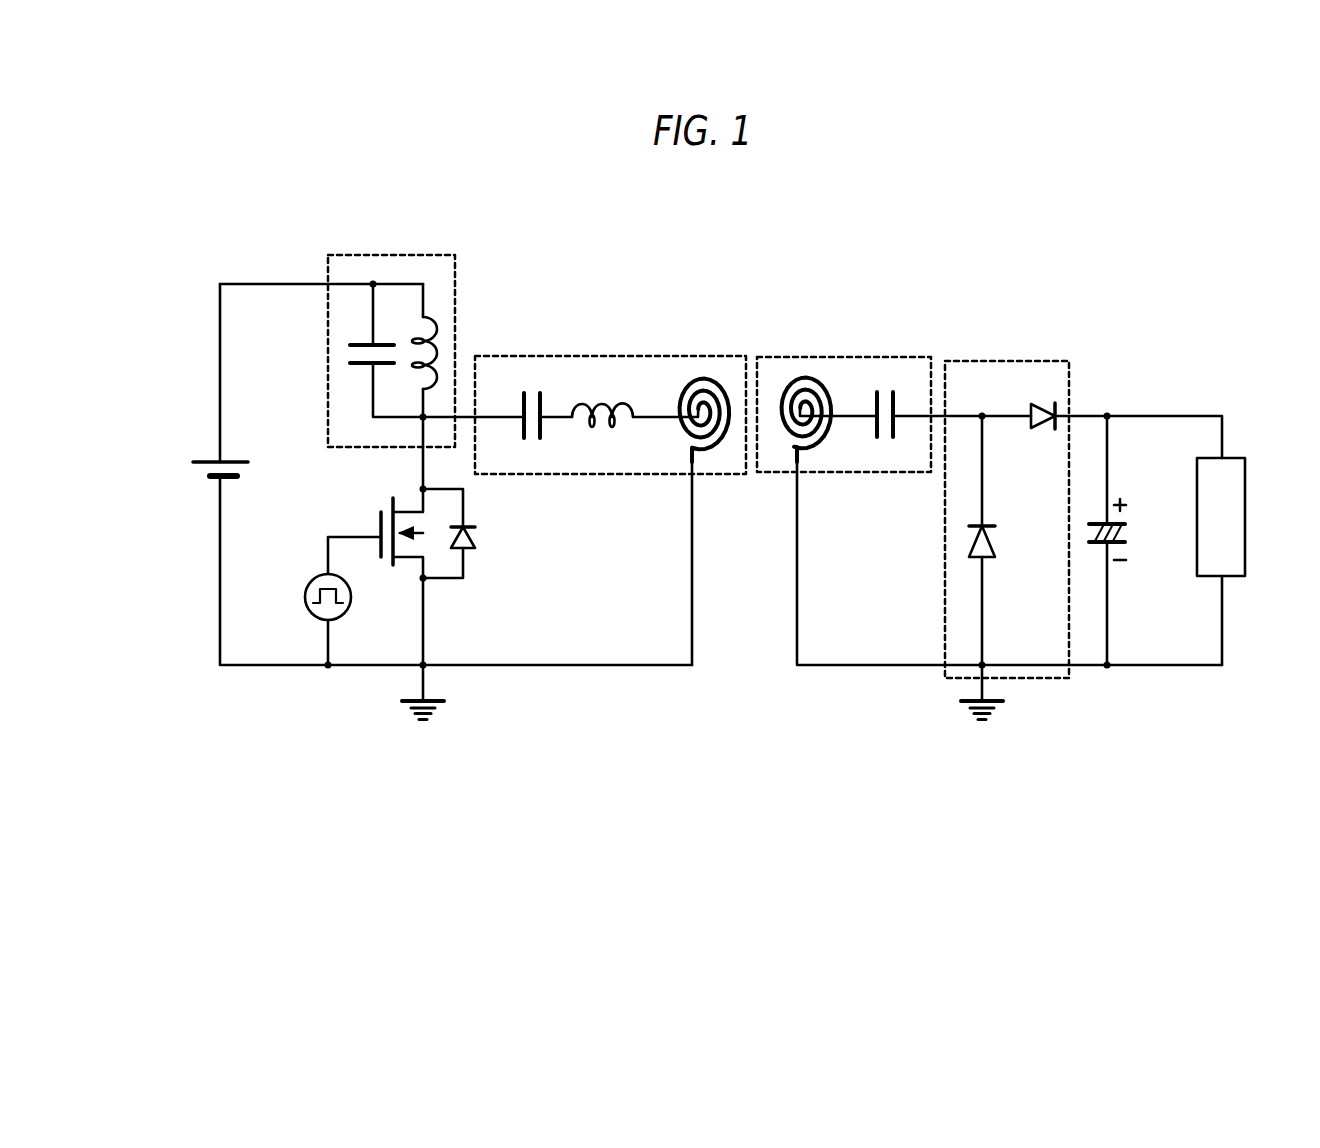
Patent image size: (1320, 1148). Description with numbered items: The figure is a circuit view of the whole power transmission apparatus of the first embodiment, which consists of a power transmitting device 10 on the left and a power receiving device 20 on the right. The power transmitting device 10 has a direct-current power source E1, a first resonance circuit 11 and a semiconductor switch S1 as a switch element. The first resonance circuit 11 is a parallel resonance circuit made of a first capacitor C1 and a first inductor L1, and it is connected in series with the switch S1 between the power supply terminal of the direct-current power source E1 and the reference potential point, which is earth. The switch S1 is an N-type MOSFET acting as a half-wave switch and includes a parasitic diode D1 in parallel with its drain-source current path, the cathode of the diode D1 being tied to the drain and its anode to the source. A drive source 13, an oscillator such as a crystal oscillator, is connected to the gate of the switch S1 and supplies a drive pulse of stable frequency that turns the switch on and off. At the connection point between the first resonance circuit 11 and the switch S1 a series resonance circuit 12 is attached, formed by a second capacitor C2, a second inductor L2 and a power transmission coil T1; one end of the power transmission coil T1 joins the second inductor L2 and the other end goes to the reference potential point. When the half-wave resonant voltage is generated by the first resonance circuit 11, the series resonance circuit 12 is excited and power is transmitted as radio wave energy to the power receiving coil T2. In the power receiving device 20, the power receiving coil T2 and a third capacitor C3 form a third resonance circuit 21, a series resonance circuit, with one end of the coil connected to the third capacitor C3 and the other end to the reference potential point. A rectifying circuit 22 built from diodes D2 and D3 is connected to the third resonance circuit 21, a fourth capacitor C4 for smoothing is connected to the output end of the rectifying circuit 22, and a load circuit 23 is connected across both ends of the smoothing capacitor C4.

The power transmitting device 10 is at (533, 294).
The first resonance circuit 11 is at (390, 255).
The series resonance circuit 12 is at (605, 356).
The drive source 13 is at (305, 597).
The power receiving device 20 is at (933, 327).
The third resonance circuit 21 is at (875, 357).
The rectifying circuit 22 is at (1028, 361).
The load circuit 23 is at (1246, 526).
The direct-current power source E1 is at (208, 476).
The first capacitor C1 is at (350, 354).
The first inductor L1 is at (440, 348).
The second capacitor C2 is at (532, 440).
The second inductor L2 is at (600, 422).
The power transmission coil T1 is at (698, 372).
The power receiving coil T2 is at (803, 368).
The third capacitor C3 is at (886, 440).
The parasitic diode D1 is at (470, 550).
The diode D2 is at (995, 550).
The diode D3 is at (1040, 428).
The fourth capacitor C4 is at (1127, 533).
The semiconductor switch S1 is at (372, 519).